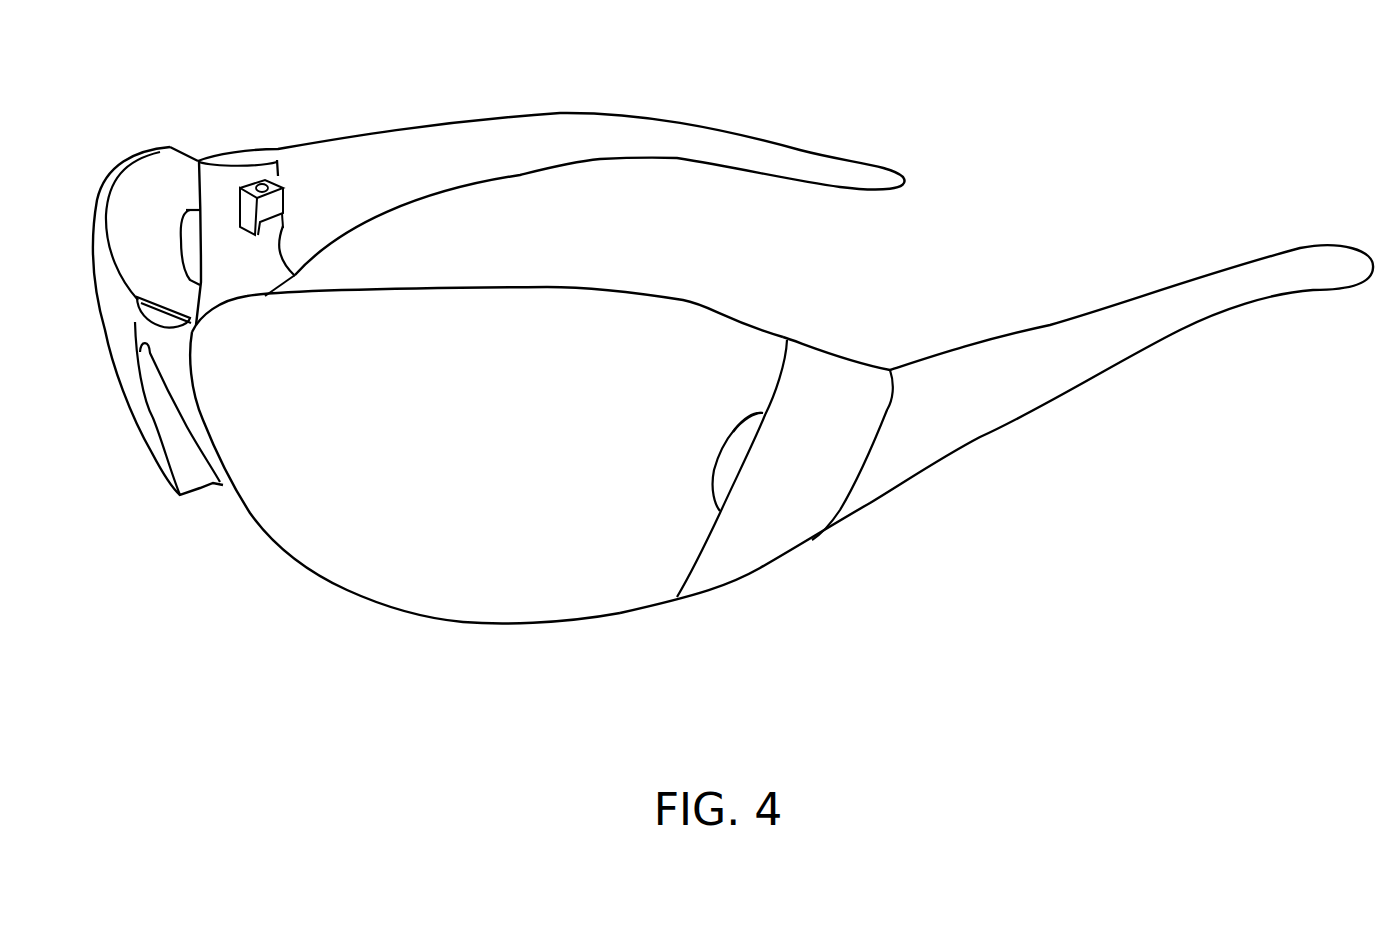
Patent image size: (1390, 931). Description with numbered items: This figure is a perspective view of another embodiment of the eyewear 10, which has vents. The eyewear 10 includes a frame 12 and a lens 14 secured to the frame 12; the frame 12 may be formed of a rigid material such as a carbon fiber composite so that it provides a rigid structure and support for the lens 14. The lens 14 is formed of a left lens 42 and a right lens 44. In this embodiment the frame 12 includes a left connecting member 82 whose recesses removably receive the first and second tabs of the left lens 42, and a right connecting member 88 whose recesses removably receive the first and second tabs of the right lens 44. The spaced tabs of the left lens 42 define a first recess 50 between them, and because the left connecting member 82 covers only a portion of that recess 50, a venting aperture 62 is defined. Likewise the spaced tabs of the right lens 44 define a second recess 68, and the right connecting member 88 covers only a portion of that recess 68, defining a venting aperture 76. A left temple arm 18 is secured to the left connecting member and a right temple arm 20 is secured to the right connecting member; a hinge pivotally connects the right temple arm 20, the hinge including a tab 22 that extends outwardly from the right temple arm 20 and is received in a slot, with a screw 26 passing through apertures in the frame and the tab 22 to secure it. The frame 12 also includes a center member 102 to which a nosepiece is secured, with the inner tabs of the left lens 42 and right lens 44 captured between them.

The eyewear 10 is at (1078, 209).
The frame 12 is at (137, 313).
The lens 14 is at (247, 578).
The left temple arm 18 is at (1205, 313).
The right temple arm 20 is at (661, 130).
The tab 22 is at (267, 226).
The screw 26 is at (269, 178).
The left lens 42 is at (446, 472).
The right lens 44 is at (100, 272).
The first recess 50 is at (735, 434).
The first venting aperture 62 is at (723, 472).
The second recess 68 is at (186, 222).
The second venting aperture 76 is at (192, 250).
The left connecting member 82 is at (783, 547).
The right connecting member 88 is at (225, 166).
The center member 102 is at (187, 378).